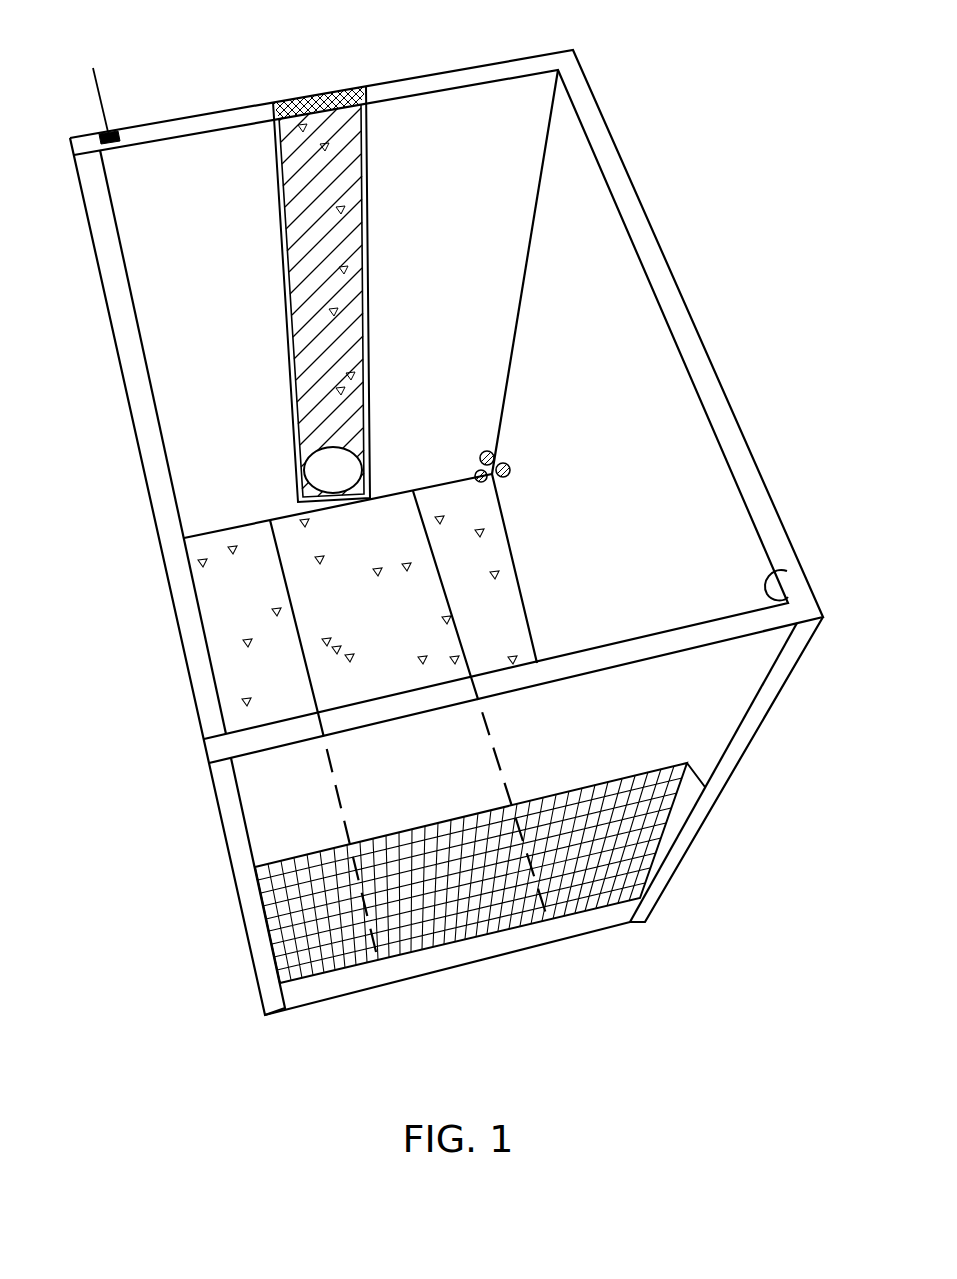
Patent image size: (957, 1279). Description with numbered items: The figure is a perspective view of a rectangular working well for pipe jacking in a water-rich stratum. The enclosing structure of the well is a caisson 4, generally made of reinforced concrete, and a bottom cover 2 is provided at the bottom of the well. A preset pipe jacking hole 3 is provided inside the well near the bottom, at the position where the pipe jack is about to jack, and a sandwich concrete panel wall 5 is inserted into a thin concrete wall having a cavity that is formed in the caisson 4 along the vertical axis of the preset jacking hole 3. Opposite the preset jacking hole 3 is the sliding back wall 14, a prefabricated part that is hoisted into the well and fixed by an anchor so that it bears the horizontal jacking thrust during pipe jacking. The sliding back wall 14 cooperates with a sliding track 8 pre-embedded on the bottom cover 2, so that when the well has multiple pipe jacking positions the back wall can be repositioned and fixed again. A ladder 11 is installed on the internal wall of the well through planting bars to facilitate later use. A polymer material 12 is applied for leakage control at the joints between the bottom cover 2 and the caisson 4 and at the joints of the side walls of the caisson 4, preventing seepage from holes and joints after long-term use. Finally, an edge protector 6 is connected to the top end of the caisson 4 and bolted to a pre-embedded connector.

The bottom cover 2 is at (240, 683).
The preset pipe jacking hole 3 is at (323, 480).
The caisson 4 is at (583, 107).
The sandwich concrete panel wall 5 is at (307, 97).
The edge protector 6 is at (108, 130).
The sliding track 8 is at (278, 616).
The ladder 11 is at (773, 569).
The polymer material 12 is at (480, 467).
The sliding back wall 14 is at (690, 770).